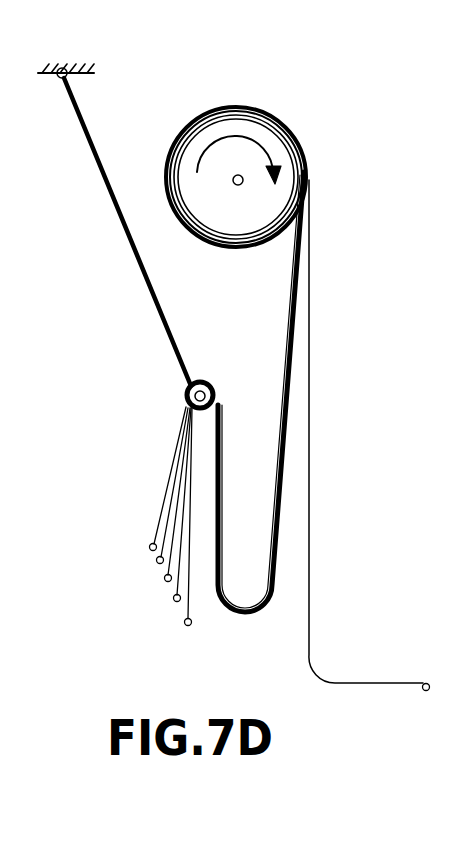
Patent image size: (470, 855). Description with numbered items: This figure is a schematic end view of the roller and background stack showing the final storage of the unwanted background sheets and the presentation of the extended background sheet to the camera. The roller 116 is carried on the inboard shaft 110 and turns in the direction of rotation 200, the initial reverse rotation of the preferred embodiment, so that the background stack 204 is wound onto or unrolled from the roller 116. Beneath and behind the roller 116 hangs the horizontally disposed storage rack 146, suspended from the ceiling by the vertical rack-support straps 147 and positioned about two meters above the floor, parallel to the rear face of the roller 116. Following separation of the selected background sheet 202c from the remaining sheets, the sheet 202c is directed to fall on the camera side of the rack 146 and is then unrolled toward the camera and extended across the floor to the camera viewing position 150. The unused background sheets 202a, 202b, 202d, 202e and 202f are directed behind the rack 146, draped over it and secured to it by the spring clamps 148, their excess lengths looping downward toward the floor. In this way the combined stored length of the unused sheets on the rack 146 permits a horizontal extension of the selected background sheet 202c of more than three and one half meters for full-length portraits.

The inboard shaft 110 is at (238, 185).
The roller 116 is at (293, 135).
The storage rack 146 is at (190, 387).
The rack-support straps 147 is at (138, 265).
The spring clamps 148 is at (210, 387).
The camera viewing position 150 is at (320, 488).
The direction of rotation 200 is at (222, 145).
The background stack 204 is at (305, 180).
The background sheet 202a is at (157, 559).
The background sheet 202b is at (150, 545).
The selected background sheet 202c is at (423, 691).
The background sheet 202d is at (186, 626).
The background sheet 202e is at (174, 601).
The background sheet 202f is at (165, 579).